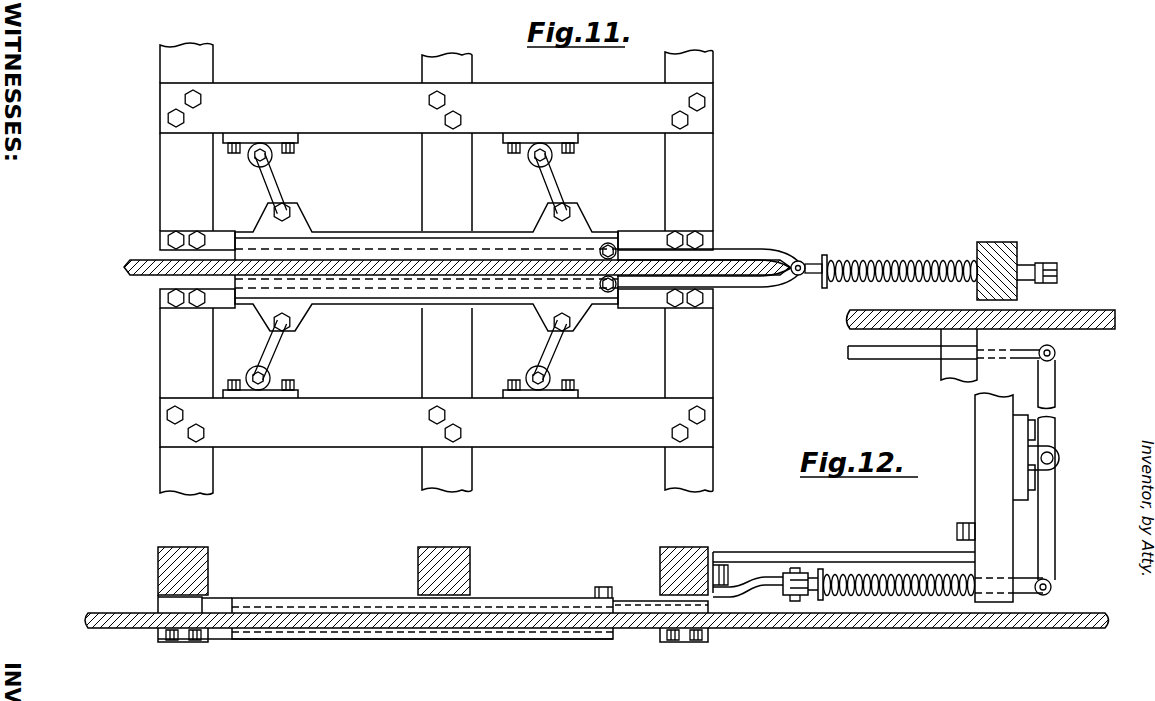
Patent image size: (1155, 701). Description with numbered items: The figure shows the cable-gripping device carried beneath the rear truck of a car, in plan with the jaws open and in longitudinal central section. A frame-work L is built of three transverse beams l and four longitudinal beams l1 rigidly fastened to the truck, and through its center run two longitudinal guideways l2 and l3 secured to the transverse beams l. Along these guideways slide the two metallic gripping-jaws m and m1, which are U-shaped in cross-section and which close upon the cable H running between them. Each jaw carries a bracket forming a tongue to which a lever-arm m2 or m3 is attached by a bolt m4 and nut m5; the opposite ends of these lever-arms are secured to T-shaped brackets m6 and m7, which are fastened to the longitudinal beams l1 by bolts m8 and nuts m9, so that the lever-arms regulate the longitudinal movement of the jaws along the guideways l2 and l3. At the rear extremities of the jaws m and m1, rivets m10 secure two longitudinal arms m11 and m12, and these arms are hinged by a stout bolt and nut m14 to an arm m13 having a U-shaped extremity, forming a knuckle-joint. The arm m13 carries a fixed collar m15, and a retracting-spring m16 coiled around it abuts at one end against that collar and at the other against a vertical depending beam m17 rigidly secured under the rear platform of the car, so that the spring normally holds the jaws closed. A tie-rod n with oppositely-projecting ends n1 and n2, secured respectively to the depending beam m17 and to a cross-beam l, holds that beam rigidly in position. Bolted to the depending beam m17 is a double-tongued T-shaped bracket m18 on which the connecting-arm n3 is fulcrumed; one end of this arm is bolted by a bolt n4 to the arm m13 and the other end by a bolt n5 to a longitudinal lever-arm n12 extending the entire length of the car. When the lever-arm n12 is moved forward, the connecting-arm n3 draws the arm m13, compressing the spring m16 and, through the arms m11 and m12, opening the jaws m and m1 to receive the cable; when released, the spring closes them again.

In FIG. 11, the transverse beam l is at (436, 269).
In FIG. 12, the transverse beam l is at (648, 560).
In FIG. 11, the longitudinal beam l1 is at (436, 265).
In FIG. 12, the longitudinal beam l1 is at (633, 642).
In FIG. 11, the longitudinal guideway l2 is at (648, 231).
In FIG. 12, the longitudinal guideway l2 is at (160, 598).
In FIG. 11, the longitudinal guideway l3 is at (647, 308).
In FIG. 11, the frame-work L is at (395, 158).
In FIG. 11, the gripping-jaw m is at (378, 238).
In FIG. 12, the gripping-jaw m is at (378, 598).
In FIG. 11, the gripping-jaw m1 is at (380, 298).
In FIG. 11, the lever-arm m2 is at (564, 185).
In FIG. 11, the lever-arm m3 is at (564, 352).
In FIG. 11, the bolt m4 is at (576, 211).
In FIG. 11, the nut m5 is at (576, 322).
In FIG. 11, the T-shaped bracket m6 is at (532, 157).
In FIG. 11, the T-shaped bracket m7 is at (552, 379).
In FIG. 11, the bolt m8 is at (554, 158).
In FIG. 11, the nut m9 is at (532, 376).
In FIG. 11, the rivet m10 is at (608, 294).
In FIG. 12, the rivet m10 is at (604, 587).
In FIG. 11, the longitudinal arm m11 is at (735, 256).
In FIG. 12, the longitudinal arm m11 is at (748, 587).
In FIG. 11, the longitudinal arm m12 is at (737, 287).
In FIG. 11, the arm having a U-shaped extremity m13 is at (824, 255).
In FIG. 12, the arm having a U-shaped extremity m13 is at (1022, 596).
In FIG. 11, the bolt and nut m14 is at (798, 276).
In FIG. 12, the bolt and nut m14 is at (783, 577).
In FIG. 11, the fixed collar m15 is at (830, 286).
In FIG. 12, the fixed collar m15 is at (830, 575).
In FIG. 11, the retracting-spring m16 is at (900, 260).
In FIG. 12, the retracting-spring m16 is at (900, 575).
In FIG. 11, the vertical depending beam m17 is at (985, 248).
In FIG. 12, the vertical depending beam m17 is at (980, 497).
In FIG. 12, the T-shaped bracket m18 is at (1060, 452).
In FIG. 11, the shaft H is at (457, 277).
In FIG. 12, the shaft H is at (597, 634).
In FIG. 12, the tie-rod n is at (780, 552).
In FIG. 12, the projecting end n1 is at (966, 523).
In FIG. 12, the projecting end n2 is at (722, 565).
In FIG. 12, the connecting-arm n3 is at (1056, 512).
In FIG. 12, the bolt n4 is at (1052, 587).
In FIG. 12, the bolt n5 is at (1056, 353).
In FIG. 12, the longitudinal lever-arm n12 is at (928, 359).